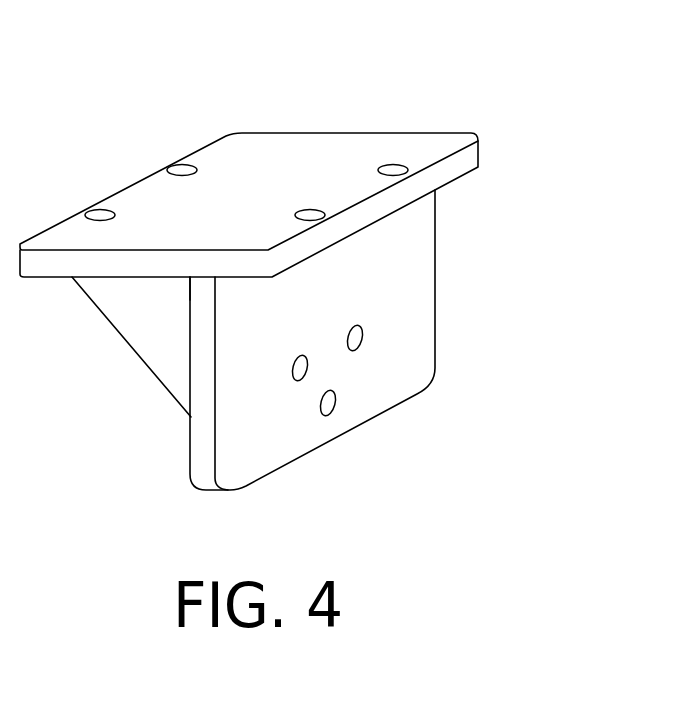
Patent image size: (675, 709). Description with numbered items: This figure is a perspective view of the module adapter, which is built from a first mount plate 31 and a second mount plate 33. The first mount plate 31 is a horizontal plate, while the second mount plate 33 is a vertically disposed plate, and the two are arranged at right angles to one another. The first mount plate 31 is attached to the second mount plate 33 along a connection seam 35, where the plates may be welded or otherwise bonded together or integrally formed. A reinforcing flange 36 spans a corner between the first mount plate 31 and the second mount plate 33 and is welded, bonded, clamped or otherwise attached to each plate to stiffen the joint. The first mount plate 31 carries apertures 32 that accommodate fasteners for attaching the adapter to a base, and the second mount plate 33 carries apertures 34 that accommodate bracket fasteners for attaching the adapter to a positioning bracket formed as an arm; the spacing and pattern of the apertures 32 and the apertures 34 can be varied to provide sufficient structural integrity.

The first mount plate 31 is at (288, 150).
The apertures 32 is at (186, 167).
The second mount plate 33 is at (422, 333).
The apertures 34 is at (357, 336).
The connection seam 35 is at (190, 279).
The reinforcing flange 36 is at (127, 320).